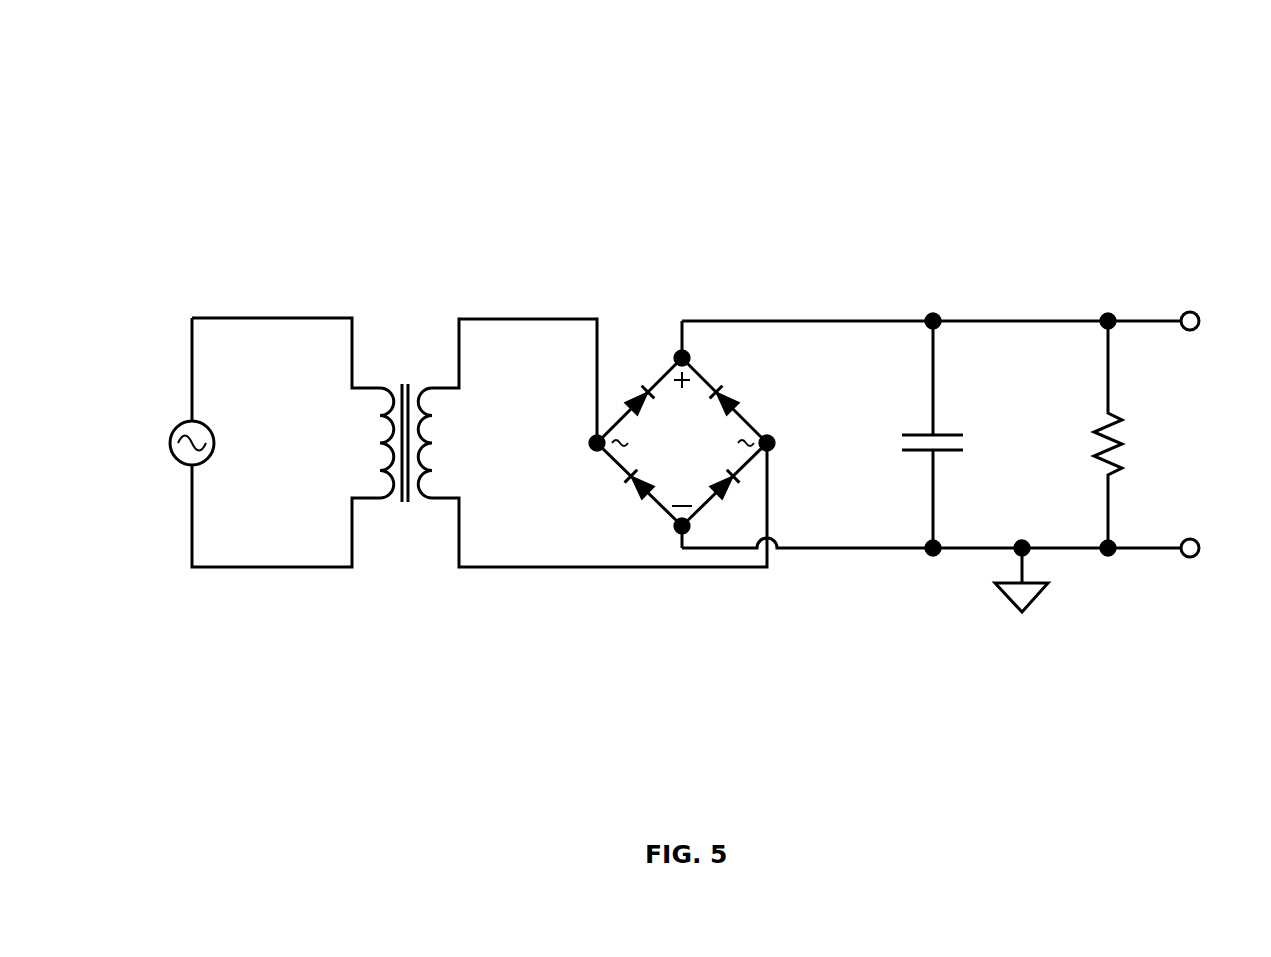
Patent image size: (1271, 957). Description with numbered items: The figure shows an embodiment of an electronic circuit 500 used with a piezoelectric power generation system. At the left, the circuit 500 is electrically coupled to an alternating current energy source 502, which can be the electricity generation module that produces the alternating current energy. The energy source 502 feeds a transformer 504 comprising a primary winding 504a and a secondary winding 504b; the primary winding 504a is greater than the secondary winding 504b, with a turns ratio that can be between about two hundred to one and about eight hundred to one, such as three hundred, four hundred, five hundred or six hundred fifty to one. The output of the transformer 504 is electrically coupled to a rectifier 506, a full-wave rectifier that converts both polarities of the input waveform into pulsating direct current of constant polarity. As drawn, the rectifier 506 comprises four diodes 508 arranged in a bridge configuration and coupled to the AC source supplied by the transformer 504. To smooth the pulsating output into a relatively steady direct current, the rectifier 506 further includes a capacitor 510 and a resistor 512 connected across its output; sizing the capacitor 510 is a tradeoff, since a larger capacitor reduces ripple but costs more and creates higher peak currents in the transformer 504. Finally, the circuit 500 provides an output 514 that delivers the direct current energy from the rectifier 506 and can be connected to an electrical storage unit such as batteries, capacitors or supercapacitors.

The electronic circuit 500 is at (355, 90).
The alternating current energy source 502 is at (178, 424).
The transformer 504 is at (392, 303).
The primary winding 504a is at (378, 446).
The secondary winding 504b is at (434, 446).
The rectifier 506 is at (656, 249).
The diodes 508 is at (628, 398).
The capacitor 510 is at (918, 438).
The resistor 512 is at (1098, 416).
The output 514 is at (1203, 266).